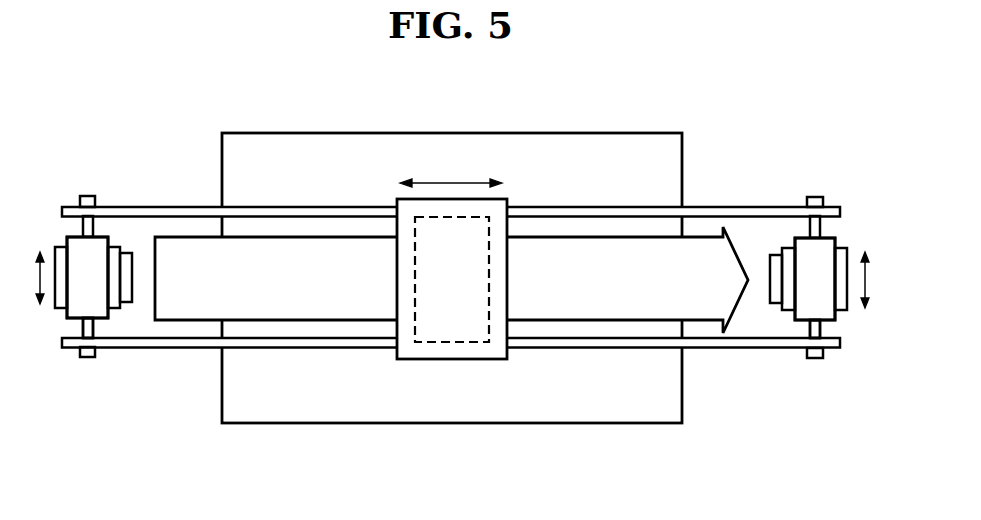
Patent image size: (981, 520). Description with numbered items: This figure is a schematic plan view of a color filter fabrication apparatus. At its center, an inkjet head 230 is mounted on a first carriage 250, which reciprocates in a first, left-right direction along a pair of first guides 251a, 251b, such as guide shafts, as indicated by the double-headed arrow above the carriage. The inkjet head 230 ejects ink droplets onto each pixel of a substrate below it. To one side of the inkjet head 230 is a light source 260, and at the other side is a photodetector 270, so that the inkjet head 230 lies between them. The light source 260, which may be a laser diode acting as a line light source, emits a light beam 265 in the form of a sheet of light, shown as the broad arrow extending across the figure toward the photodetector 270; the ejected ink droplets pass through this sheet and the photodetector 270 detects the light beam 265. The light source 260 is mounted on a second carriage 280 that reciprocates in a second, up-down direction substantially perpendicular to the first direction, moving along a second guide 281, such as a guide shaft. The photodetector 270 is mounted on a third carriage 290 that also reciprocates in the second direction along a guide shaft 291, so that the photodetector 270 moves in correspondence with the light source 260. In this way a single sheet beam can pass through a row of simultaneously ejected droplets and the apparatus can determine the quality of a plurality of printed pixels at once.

The inkjet head 230 is at (430, 342).
The first carriage 250 is at (483, 360).
The first guide 251a is at (583, 207).
The first guide 251b is at (693, 348).
The light source 260 is at (122, 306).
The light beam 265 is at (700, 243).
The photodetector 270 is at (783, 308).
The second carriage 280 is at (77, 245).
The second guide 281 is at (83, 330).
The third carriage 290 is at (830, 248).
The second shaft 291 is at (815, 328).